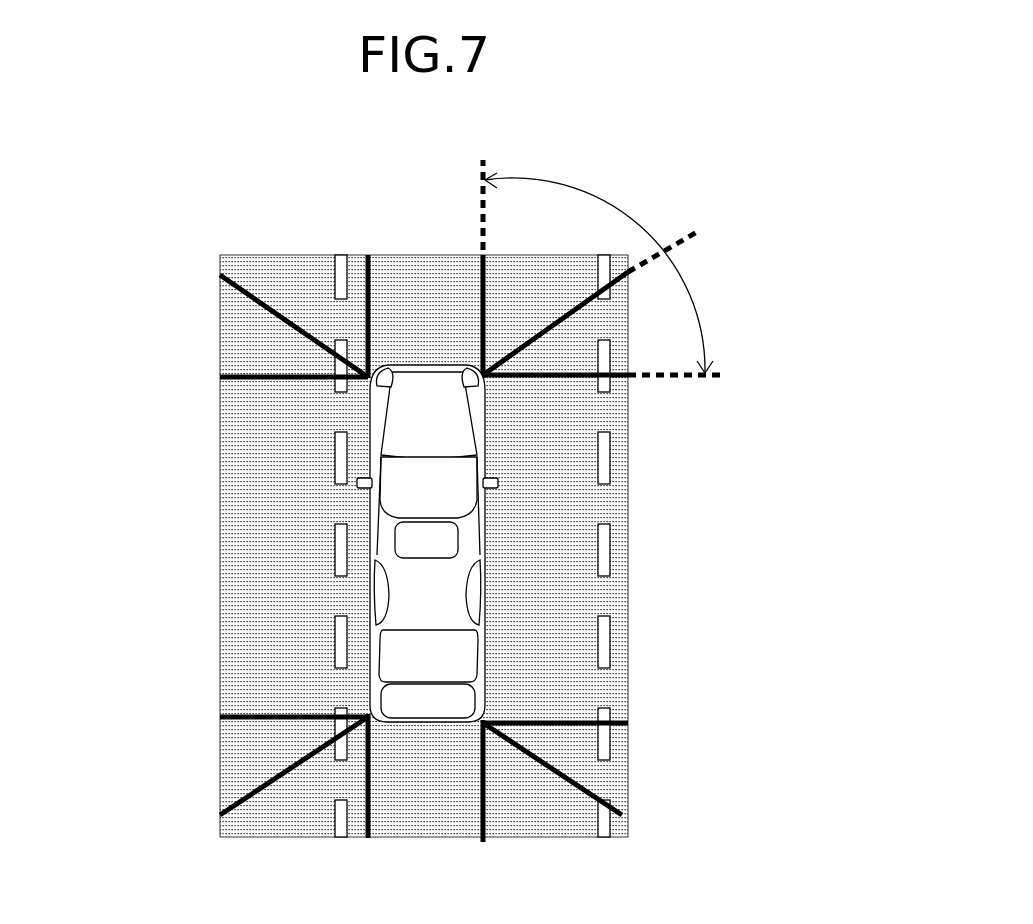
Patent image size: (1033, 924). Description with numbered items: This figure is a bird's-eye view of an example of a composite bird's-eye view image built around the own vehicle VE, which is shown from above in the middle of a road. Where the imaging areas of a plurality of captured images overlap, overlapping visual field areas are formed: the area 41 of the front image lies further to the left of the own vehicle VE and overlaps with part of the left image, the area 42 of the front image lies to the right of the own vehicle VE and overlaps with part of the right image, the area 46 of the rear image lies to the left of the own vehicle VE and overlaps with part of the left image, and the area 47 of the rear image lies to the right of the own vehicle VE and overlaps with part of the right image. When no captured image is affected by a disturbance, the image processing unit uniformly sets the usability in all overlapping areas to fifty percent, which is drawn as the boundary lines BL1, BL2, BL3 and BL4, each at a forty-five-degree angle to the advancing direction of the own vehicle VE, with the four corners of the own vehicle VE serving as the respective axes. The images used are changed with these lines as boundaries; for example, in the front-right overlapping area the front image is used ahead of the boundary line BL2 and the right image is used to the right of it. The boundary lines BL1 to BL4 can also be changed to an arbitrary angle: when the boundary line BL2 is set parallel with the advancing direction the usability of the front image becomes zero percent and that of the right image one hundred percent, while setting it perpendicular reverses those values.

The area 41 is at (252, 264).
The area 42 is at (655, 245).
The area 46 is at (211, 806).
The area 47 is at (644, 804).
The boundary line BL1 is at (243, 296).
The boundary line BL2 is at (587, 297).
The boundary line BL3 is at (242, 805).
The boundary line BL4 is at (580, 792).
The own vehicle VE is at (477, 553).